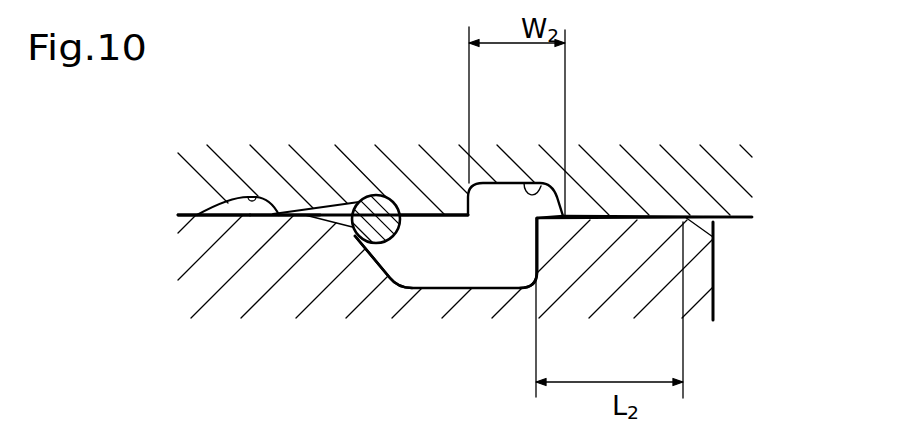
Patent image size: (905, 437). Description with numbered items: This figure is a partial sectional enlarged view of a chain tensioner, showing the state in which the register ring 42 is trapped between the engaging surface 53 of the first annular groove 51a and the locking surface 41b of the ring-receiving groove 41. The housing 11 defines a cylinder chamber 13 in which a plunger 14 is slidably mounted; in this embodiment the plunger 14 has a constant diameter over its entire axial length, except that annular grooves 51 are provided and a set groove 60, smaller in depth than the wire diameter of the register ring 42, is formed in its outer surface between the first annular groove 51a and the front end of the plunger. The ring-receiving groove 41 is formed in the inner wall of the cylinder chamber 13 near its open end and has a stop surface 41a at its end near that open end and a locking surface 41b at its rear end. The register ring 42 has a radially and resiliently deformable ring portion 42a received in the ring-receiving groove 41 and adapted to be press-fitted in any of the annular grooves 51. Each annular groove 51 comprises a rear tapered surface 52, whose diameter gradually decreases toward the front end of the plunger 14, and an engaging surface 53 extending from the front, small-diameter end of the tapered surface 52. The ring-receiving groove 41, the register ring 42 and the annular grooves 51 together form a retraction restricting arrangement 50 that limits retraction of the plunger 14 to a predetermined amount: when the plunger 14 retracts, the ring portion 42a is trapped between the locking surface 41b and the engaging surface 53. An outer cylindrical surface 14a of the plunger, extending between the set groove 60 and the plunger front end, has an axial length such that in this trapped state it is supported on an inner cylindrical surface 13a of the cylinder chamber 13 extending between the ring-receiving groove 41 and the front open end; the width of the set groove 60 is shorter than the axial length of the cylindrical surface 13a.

The housing 11 is at (340, 300).
The cylinder chamber 13 is at (200, 214).
The inner cylindrical surface 13a is at (620, 216).
The plunger 14 is at (203, 167).
The outer cylindrical surface 14a is at (733, 219).
The ring-receiving groove 41 is at (452, 265).
The stop surface 41a is at (530, 255).
The locking surface 41b is at (393, 262).
The register ring 42 is at (358, 194).
The ring portion 42a is at (380, 220).
The retraction restricting arrangement 50 is at (342, 193).
The annular groove 51 is at (256, 193).
The first annular groove 51a is at (418, 212).
The rear tapered surface 52 is at (220, 215).
The engaging surface 53 is at (268, 215).
The set groove 60 is at (545, 181).